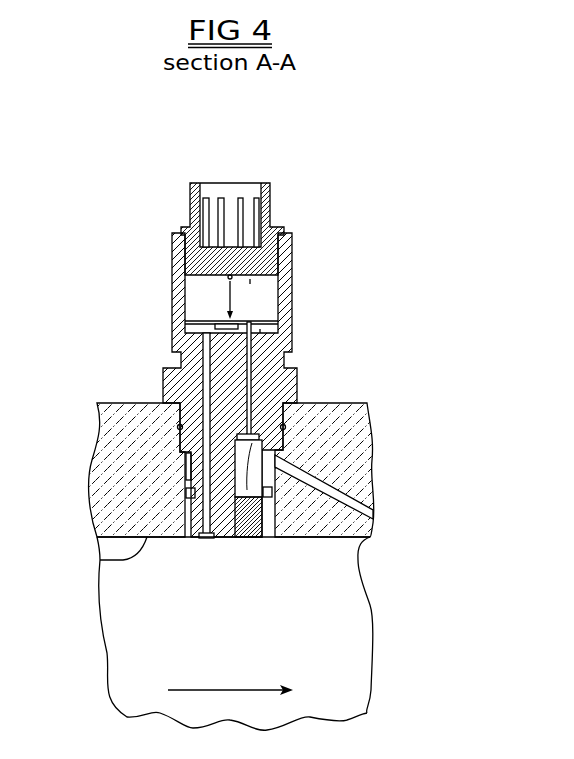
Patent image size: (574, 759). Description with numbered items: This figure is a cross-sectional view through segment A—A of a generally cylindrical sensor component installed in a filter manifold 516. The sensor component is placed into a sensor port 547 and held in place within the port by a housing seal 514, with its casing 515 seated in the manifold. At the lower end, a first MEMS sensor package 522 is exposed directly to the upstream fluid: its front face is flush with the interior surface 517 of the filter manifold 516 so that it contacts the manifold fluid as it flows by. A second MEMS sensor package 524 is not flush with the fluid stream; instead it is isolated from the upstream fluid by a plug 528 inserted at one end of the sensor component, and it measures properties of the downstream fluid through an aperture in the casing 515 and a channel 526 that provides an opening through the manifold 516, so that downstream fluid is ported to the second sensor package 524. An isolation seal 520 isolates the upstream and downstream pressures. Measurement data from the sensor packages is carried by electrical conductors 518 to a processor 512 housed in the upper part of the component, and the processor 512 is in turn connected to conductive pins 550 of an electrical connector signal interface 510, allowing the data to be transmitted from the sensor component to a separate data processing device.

The electrical connector signal interface 510 is at (276, 185).
The processor 512 is at (205, 321).
The housing seal 514 is at (288, 411).
The casing 515 is at (292, 294).
The filter manifold 516 is at (125, 404).
The interior surface of the filter manifold 517 is at (100, 561).
The electrical conductors 518 is at (205, 443).
The isolation seal 520 is at (190, 493).
The first MEMS sensor package 522 is at (203, 540).
The second MEMS sensor package 524 is at (275, 534).
The channel 526 is at (373, 517).
The plug 528 is at (257, 538).
The sensor port 547 is at (282, 427).
The conductive pins 550 is at (241, 196).